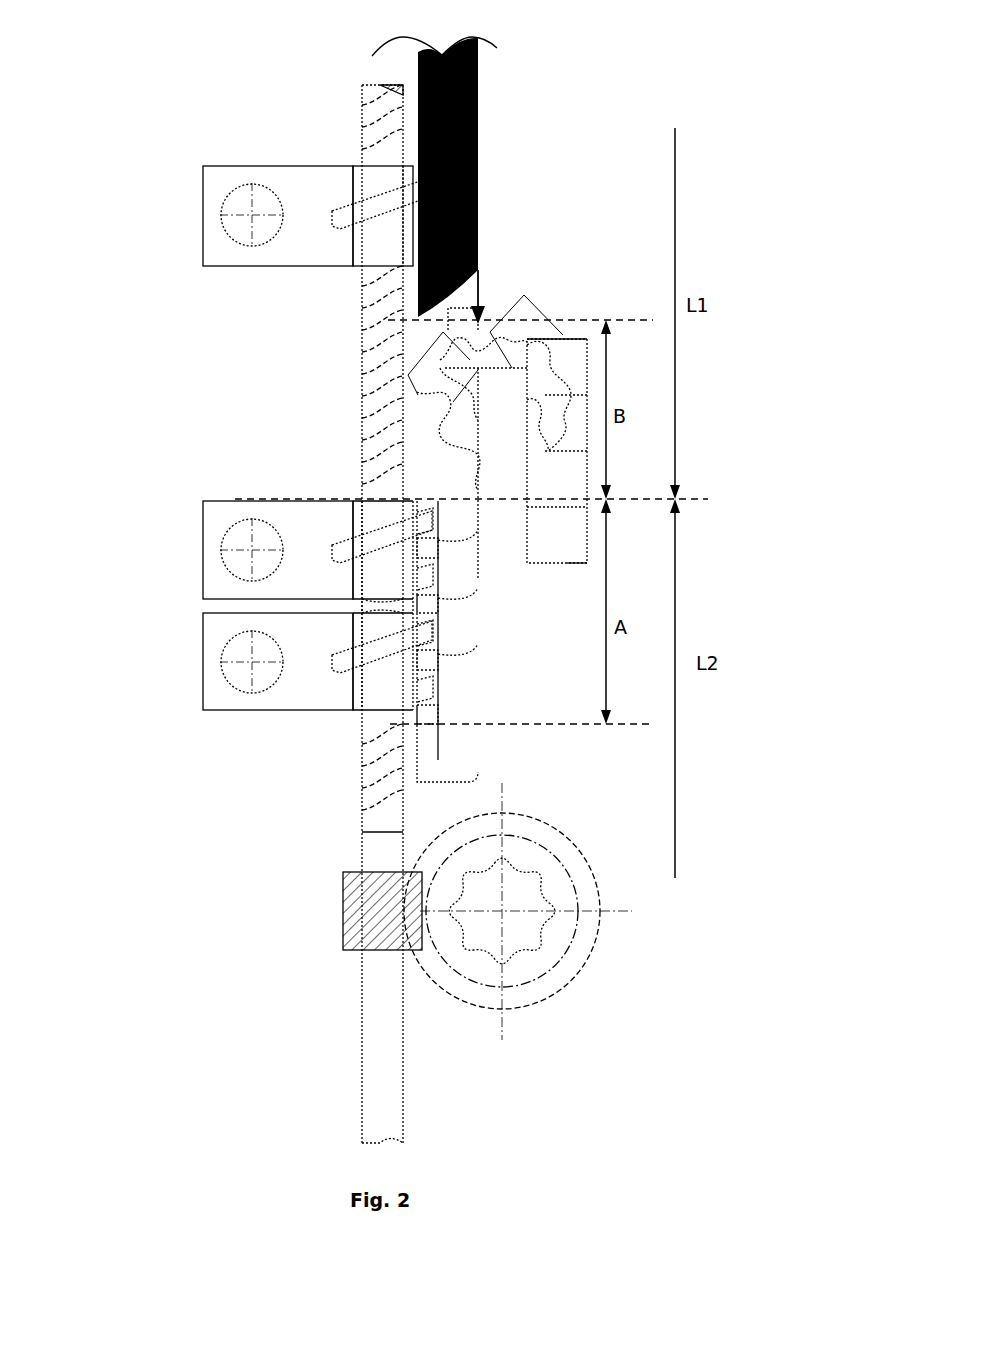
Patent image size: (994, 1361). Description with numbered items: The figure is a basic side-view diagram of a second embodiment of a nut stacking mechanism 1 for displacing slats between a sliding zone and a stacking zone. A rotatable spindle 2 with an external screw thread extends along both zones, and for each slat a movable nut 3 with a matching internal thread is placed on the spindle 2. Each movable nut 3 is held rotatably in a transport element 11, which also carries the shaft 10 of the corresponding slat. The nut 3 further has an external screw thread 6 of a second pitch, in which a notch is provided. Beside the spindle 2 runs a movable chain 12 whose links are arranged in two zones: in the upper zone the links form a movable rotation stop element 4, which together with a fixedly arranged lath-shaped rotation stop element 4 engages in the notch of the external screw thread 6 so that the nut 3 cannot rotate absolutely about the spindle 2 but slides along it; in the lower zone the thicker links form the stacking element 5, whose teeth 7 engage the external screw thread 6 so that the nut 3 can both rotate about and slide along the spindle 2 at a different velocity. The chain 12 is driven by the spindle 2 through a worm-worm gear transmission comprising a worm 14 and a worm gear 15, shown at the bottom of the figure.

The nut stacking mechanism 1 is at (130, 244).
The rotatable spindle 2 is at (372, 827).
The movable nut 3 is at (367, 176).
The rotation stop element 4 is at (483, 179).
The stacking element 5 is at (457, 529).
The external screw thread 6 is at (347, 212).
The teeth 7 is at (437, 548).
The shaft 10 is at (232, 204).
The transport element 11 is at (330, 257).
The movable chain 12 is at (553, 312).
The worm 14 is at (347, 934).
The worm gear 15 is at (568, 973).